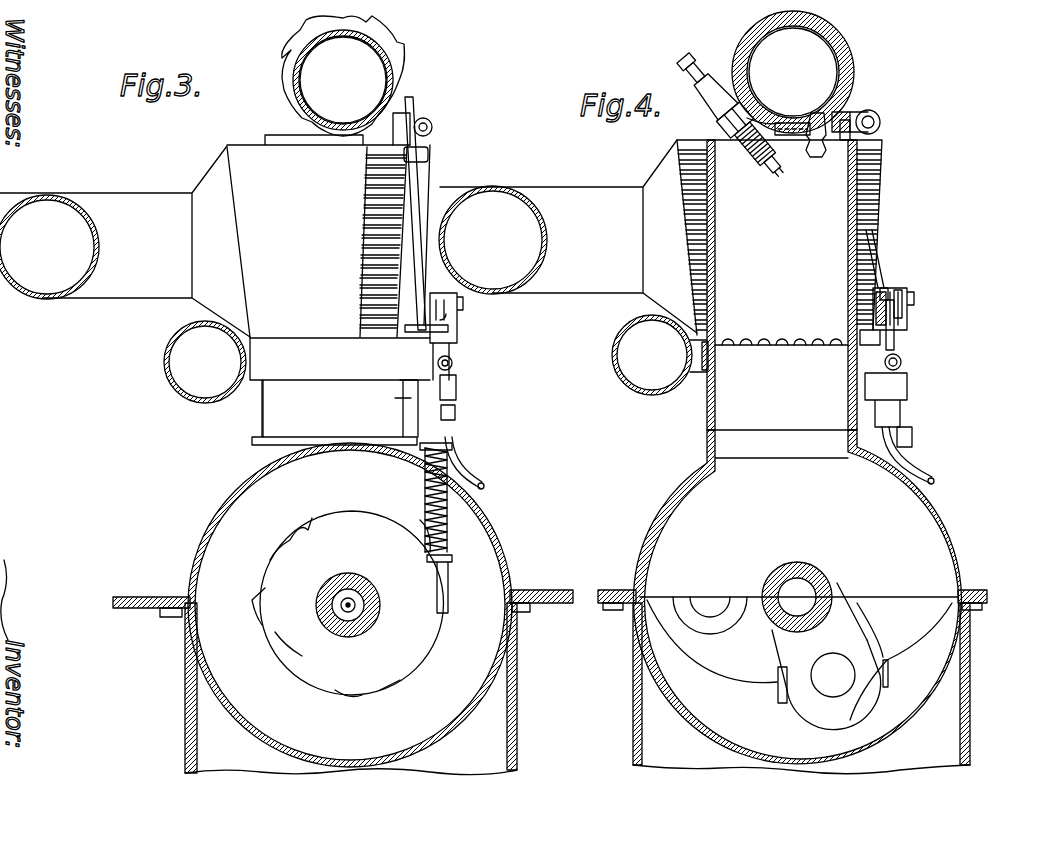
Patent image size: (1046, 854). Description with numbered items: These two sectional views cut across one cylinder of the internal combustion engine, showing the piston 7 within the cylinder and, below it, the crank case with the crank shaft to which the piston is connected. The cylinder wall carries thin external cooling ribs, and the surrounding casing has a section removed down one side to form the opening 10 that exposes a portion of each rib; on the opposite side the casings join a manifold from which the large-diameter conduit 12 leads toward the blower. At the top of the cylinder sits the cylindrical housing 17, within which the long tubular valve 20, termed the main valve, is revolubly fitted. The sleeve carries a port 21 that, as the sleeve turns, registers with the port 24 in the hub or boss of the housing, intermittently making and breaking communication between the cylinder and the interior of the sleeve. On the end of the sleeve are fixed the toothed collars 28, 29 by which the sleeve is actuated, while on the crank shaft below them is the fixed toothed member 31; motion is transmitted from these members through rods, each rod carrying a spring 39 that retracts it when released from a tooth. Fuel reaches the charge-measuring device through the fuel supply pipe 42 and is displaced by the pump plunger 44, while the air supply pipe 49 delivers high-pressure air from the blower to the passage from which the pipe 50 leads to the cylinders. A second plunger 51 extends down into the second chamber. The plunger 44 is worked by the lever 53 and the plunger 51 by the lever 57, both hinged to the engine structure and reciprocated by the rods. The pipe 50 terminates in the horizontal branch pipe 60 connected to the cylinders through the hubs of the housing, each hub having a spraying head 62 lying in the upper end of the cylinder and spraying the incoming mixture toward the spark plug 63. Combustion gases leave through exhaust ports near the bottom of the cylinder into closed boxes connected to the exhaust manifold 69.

In FIG. 4, the piston 7 is at (800, 451).
In FIG. 3, the opening of the casing 10 is at (367, 237).
In FIG. 3, the conduit 12 is at (98, 294).
In FIG. 4, the conduit 12 is at (572, 288).
In FIG. 4, the cylindrical housing 17 is at (850, 61).
In FIG. 3, the tubular valve 20 is at (348, 32).
In FIG. 4, the tubular valve 20 is at (817, 28).
In FIG. 4, the port 21 is at (760, 108).
In FIG. 4, the port 24 is at (795, 136).
In FIG. 3, the toothed collar 28 is at (393, 59).
In FIG. 3, the toothed collar 29 is at (391, 33).
In FIG. 3, the toothed member 31 is at (348, 527).
In FIG. 3, the spring 39 is at (448, 512).
In FIG. 3, the fuel supply pipe 42 is at (467, 480).
In FIG. 4, the fuel supply pipe 42 is at (920, 474).
In FIG. 4, the plunger 44 is at (902, 331).
In FIG. 3, the air supply pipe 49 is at (457, 363).
In FIG. 4, the air supply pipe 49 is at (903, 362).
In FIG. 4, the pipe 50 is at (877, 266).
In FIG. 4, the plunger 51 is at (882, 289).
In FIG. 4, the lever 53 is at (900, 293).
In FIG. 3, the lever 57 is at (414, 189).
In FIG. 4, the lever 57 is at (893, 321).
In FIG. 4, the horizontal branch pipe 60 is at (851, 111).
In FIG. 4, the spraying head 62 is at (817, 158).
In FIG. 4, the spark plug 63 is at (720, 113).
In FIG. 3, the exhaust manifold 69 is at (165, 377).
In FIG. 4, the exhaust manifold 69 is at (613, 363).